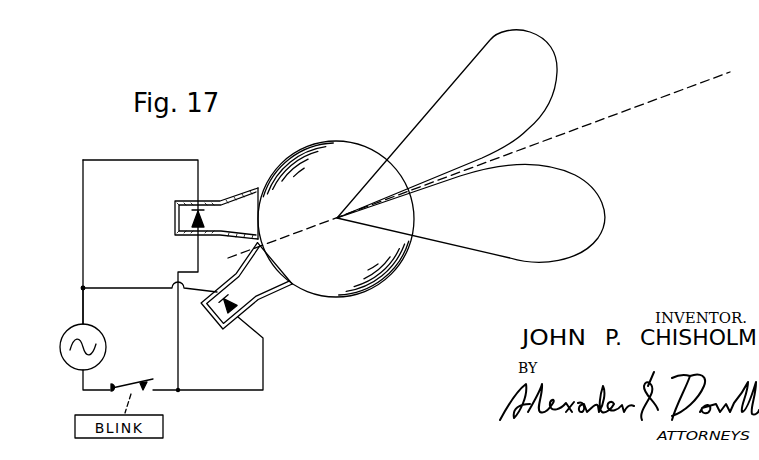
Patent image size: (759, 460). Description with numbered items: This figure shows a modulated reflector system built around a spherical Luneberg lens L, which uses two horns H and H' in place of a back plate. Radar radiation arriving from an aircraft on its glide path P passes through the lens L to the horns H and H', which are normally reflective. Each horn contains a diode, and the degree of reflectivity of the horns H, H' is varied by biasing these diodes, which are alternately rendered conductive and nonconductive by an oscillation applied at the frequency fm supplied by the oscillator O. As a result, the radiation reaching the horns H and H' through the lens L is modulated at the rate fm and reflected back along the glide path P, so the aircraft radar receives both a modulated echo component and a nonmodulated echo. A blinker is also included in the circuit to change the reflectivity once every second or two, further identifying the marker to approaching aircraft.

The horn H' is at (217, 183).
The horn H is at (262, 292).
The spherical Luneberg lens L is at (326, 160).
The glide path P is at (479, 146).
The modulation frequency fm is at (78, 316).
The oscillator O is at (62, 340).